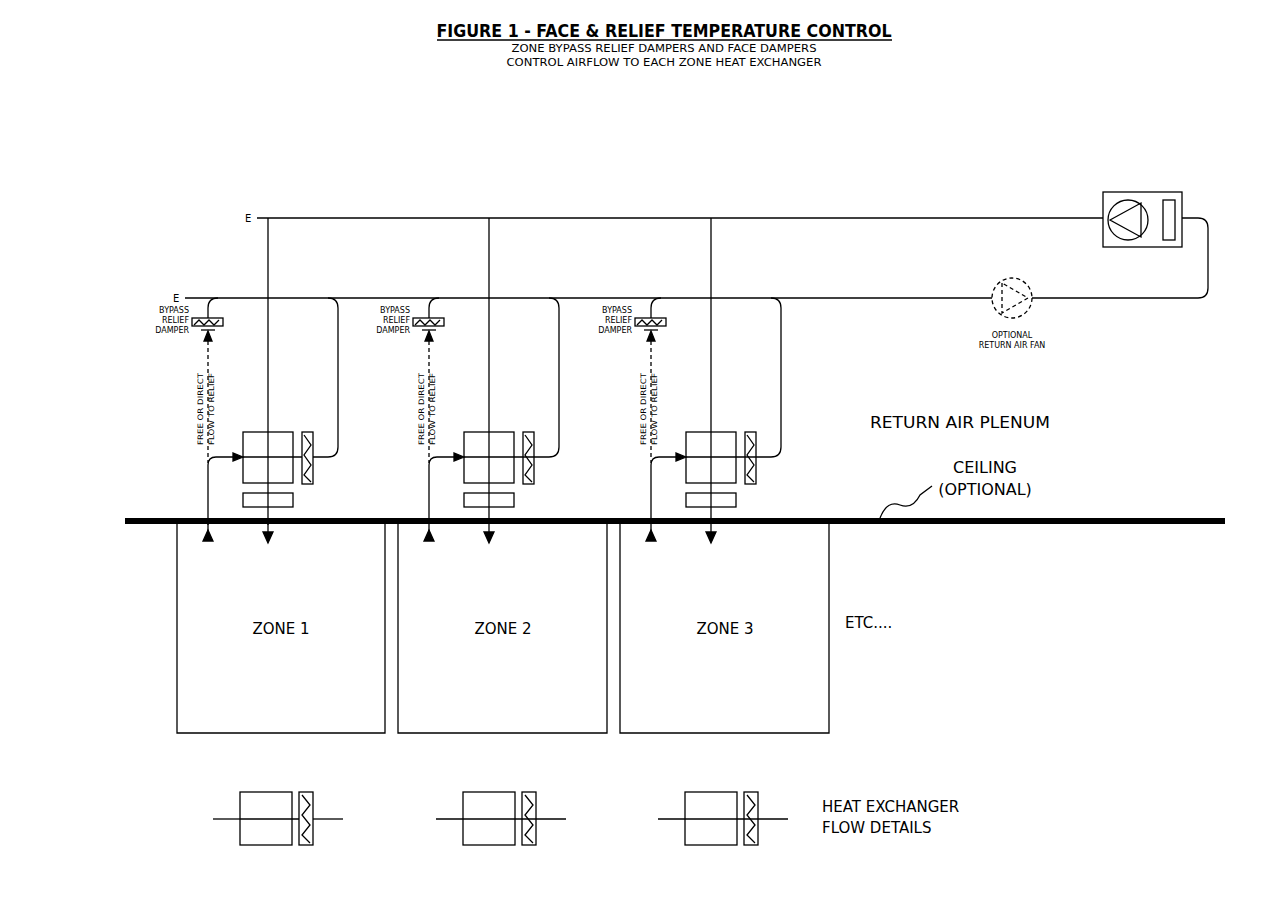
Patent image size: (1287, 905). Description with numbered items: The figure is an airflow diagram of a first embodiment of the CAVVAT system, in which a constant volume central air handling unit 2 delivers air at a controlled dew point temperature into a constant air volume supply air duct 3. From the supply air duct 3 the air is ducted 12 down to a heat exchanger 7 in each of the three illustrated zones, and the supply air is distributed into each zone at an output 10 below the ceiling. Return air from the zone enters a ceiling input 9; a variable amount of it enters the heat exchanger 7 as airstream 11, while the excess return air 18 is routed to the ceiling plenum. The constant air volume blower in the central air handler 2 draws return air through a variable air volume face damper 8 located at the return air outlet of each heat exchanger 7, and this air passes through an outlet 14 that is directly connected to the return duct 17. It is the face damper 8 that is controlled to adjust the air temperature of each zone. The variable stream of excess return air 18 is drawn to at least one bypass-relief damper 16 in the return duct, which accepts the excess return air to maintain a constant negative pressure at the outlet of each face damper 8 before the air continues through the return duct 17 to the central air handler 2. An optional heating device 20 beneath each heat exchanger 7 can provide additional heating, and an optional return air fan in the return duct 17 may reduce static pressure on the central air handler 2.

The central air handling unit 2 is at (1167, 247).
The supply air duct 3 is at (743, 218).
The heat exchanger 7 is at (290, 432).
The face damper 8 is at (308, 432).
The ceiling input 9 is at (210, 547).
The output 10 is at (270, 547).
The airstream 11 is at (226, 456).
The duct 12 is at (268, 296).
The outlet 14 is at (338, 372).
The bypass-relief damper 16 is at (223, 322).
The return duct 17 is at (848, 298).
The excess return air 18 is at (208, 365).
The heating device 20 is at (293, 500).